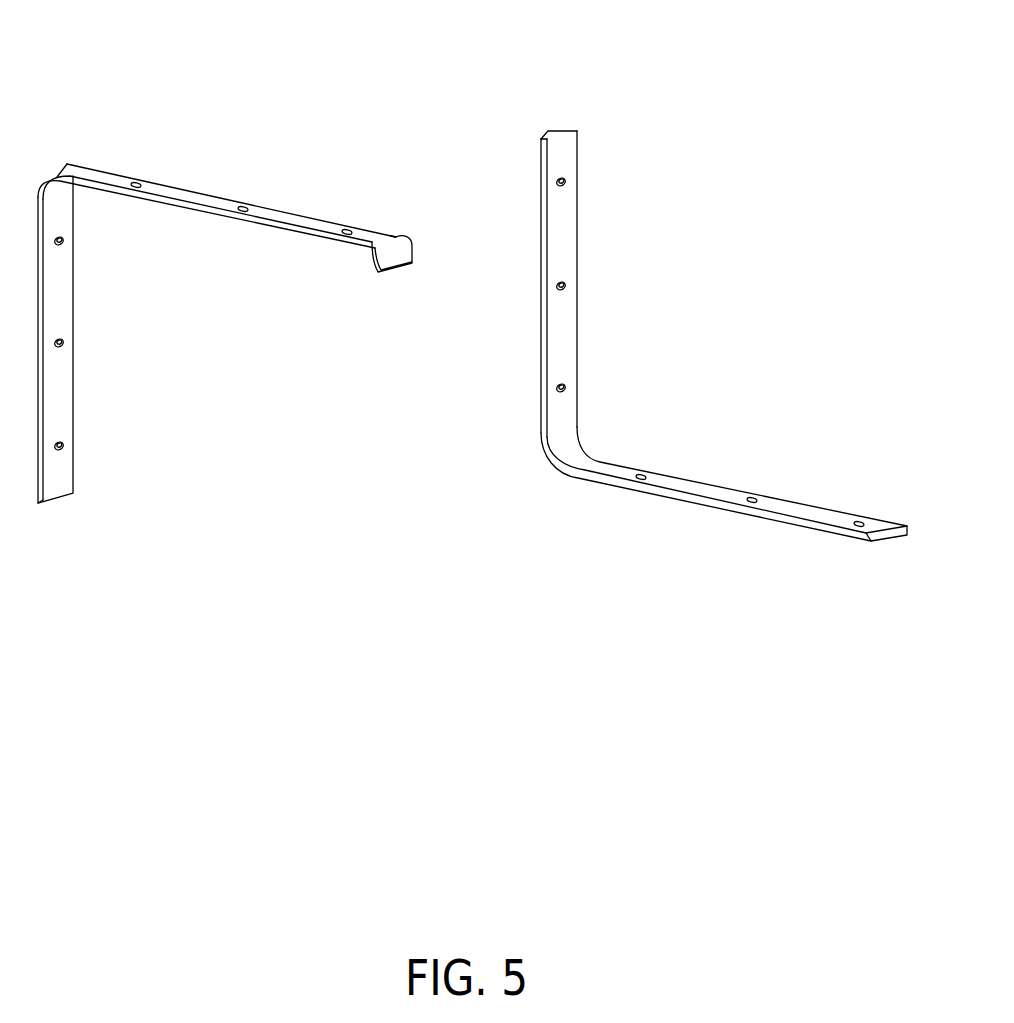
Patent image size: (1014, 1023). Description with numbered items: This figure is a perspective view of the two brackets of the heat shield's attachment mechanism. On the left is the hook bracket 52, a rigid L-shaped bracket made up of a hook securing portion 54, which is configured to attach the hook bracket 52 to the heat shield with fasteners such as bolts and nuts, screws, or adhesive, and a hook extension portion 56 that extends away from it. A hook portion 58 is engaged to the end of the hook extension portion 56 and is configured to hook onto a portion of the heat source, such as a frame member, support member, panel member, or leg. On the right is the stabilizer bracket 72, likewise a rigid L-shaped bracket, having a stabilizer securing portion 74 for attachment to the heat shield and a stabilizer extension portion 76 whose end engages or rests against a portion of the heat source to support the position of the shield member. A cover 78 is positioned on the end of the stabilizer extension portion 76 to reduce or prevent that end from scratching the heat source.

The hook bracket 52 is at (241, 263).
The hook securing portion 54 is at (63, 398).
The hook extension portion 56 is at (277, 225).
The hook portion 58 is at (387, 253).
The stabilizer bracket 72 is at (749, 336).
The stabilizer securing portion 74 is at (570, 222).
The stabilizer extension portion 76 is at (705, 487).
The cover 78 is at (887, 532).